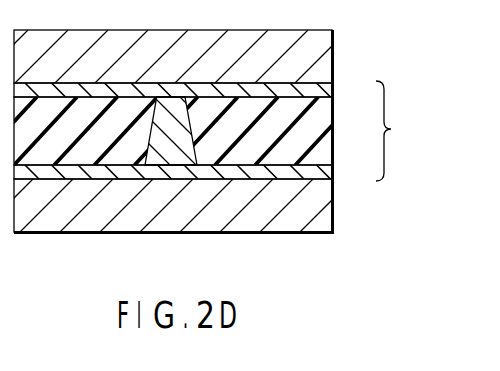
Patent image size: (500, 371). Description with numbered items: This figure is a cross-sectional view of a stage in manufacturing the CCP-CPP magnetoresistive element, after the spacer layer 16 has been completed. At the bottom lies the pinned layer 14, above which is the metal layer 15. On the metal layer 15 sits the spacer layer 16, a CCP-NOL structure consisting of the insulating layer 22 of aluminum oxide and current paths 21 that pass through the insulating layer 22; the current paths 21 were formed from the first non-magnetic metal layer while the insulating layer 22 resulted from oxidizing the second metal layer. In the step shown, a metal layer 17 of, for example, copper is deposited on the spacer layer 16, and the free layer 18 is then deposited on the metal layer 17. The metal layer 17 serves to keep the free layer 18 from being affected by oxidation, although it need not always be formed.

The pinned layer 14 is at (324, 221).
The metal layer 15 is at (326, 176).
The spacer layer 16 is at (395, 131).
The metal layer 17 is at (322, 93).
The free layer 18 is at (324, 57).
The current paths 21 is at (175, 127).
The insulating layer 22 is at (322, 140).